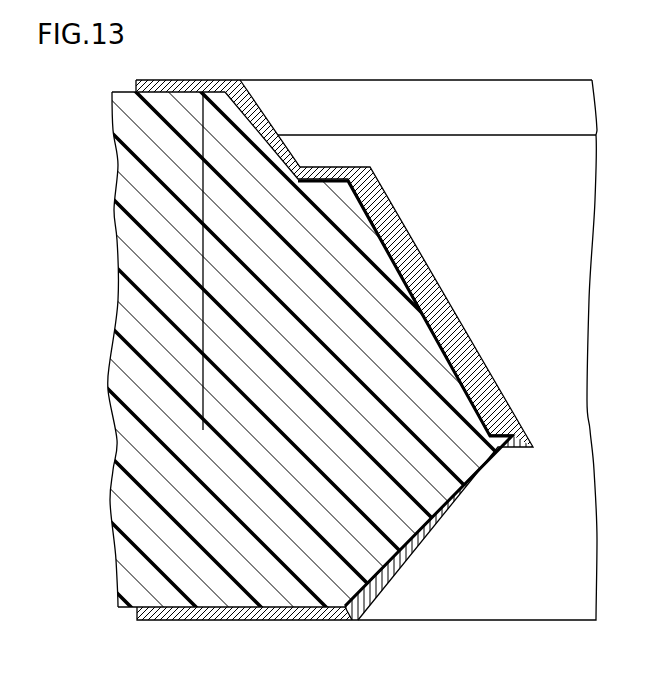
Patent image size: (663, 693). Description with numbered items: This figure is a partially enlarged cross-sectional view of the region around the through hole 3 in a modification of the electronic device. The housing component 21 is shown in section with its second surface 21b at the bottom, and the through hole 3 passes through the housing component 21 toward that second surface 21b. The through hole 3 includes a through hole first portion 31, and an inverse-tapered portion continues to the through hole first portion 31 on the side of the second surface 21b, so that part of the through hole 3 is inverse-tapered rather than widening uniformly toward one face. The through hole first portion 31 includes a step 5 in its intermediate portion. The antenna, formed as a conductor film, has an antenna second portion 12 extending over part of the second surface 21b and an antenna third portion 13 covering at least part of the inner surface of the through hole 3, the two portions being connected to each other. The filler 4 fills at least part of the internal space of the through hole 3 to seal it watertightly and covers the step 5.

The through hole 3 is at (555, 113).
The filler 4 is at (503, 160).
The step 5 is at (338, 176).
The antenna second portion 12 is at (247, 612).
The antenna third portion 13 is at (415, 245).
The housing component 21 is at (143, 188).
The second surface 21b is at (123, 609).
The through hole first portion 31 is at (203, 264).